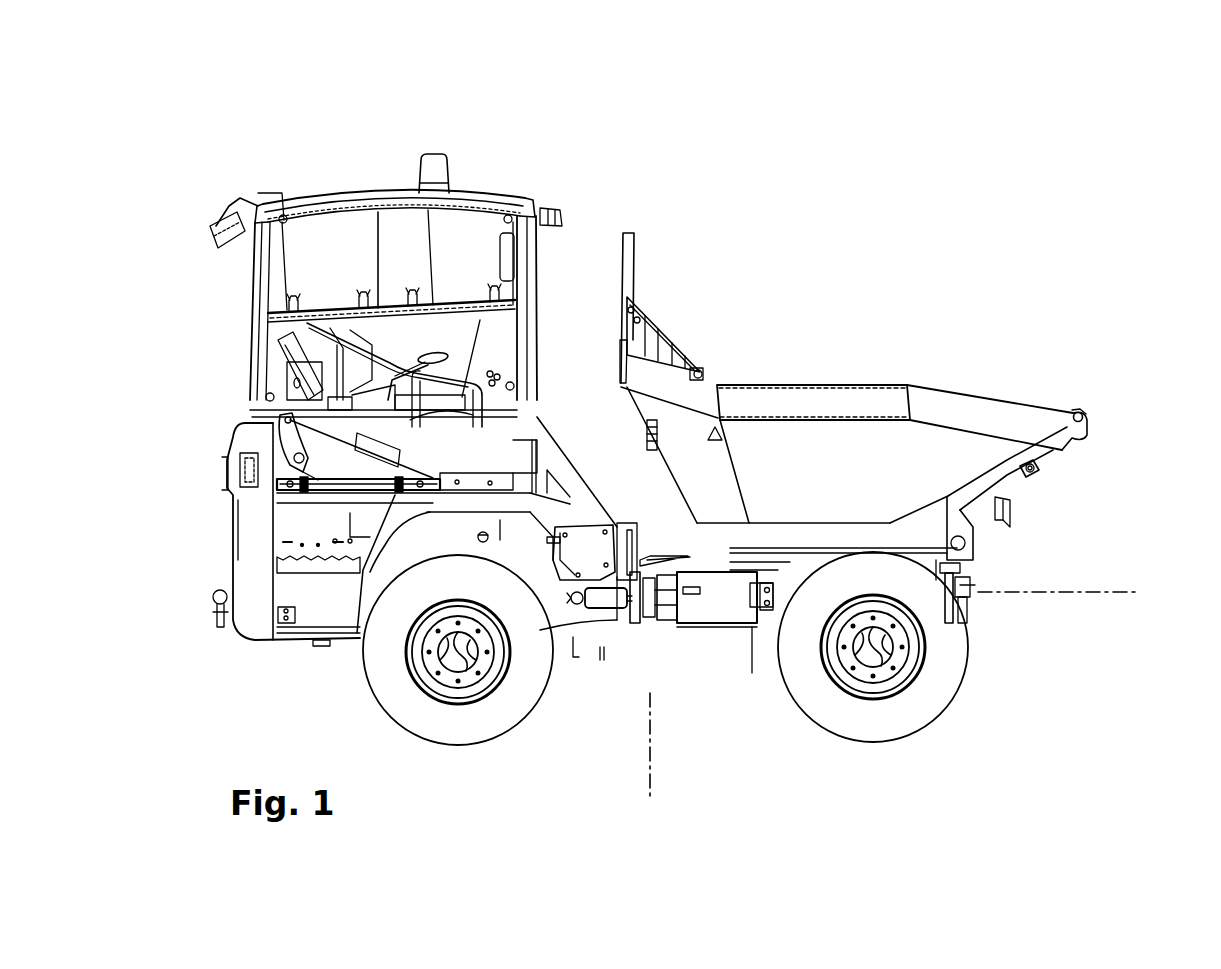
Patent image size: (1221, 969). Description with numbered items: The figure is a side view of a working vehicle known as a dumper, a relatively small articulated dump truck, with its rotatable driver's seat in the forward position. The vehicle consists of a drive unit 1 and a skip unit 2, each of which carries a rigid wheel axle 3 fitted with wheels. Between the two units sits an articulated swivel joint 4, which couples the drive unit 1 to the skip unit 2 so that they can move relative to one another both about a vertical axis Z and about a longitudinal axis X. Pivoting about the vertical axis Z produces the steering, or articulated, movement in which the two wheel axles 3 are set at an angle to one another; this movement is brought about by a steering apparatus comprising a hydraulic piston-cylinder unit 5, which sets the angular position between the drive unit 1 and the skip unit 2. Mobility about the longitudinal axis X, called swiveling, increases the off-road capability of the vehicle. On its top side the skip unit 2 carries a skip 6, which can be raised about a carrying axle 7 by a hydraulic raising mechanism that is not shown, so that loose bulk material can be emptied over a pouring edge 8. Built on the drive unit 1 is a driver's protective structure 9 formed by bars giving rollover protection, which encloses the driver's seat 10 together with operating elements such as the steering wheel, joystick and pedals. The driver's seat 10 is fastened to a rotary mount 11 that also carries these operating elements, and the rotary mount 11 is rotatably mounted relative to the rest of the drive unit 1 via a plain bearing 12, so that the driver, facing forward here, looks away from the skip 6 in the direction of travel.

The drive unit 1 is at (294, 680).
The skip unit 2 is at (758, 700).
The rigid wheel axle 3 is at (454, 735).
The articulated swivel joint 4 is at (650, 623).
The hydraulic piston-cylinder unit 5 is at (600, 597).
The skip 6 is at (788, 388).
The carrying axle 7 is at (1034, 478).
The pouring edge 8 is at (1088, 427).
The driver's protective structure 9 is at (346, 194).
The driver's seat 10 is at (493, 360).
The rotary mount 11 is at (347, 447).
The plain bearing 12 is at (372, 495).
The longitudinal axis X is at (1083, 593).
The vertical axis Z is at (650, 797).